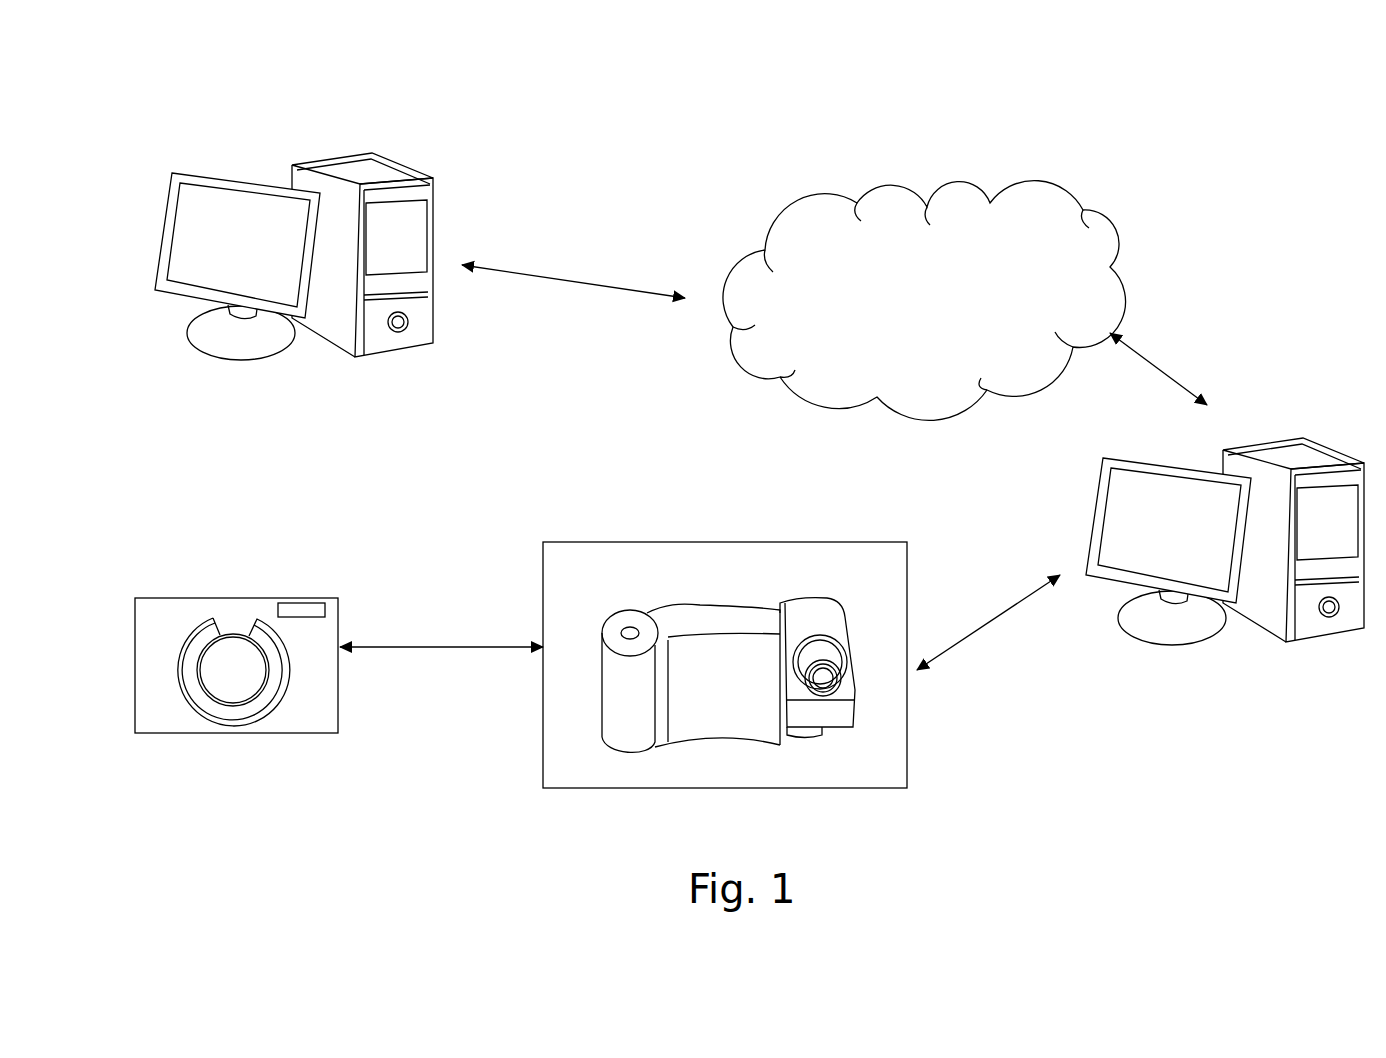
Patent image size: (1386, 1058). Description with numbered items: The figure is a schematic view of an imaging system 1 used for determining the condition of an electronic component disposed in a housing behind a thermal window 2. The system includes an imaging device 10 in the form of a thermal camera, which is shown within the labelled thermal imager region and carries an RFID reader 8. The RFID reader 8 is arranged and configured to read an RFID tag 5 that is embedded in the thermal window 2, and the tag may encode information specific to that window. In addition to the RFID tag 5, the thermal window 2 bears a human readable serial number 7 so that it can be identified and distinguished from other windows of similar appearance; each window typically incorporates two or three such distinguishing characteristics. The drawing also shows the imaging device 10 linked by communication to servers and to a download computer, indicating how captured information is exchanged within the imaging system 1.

The imaging system 1 is at (176, 149).
The thermal window 2 is at (225, 660).
The RFID tag 5 is at (205, 699).
The human readable serial number 7 is at (302, 610).
The RFID reader 8 is at (620, 703).
The imaging device 10 is at (690, 673).